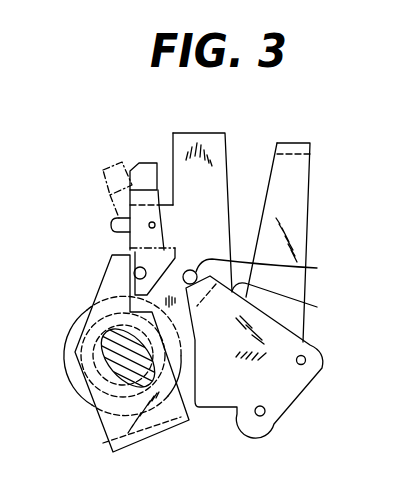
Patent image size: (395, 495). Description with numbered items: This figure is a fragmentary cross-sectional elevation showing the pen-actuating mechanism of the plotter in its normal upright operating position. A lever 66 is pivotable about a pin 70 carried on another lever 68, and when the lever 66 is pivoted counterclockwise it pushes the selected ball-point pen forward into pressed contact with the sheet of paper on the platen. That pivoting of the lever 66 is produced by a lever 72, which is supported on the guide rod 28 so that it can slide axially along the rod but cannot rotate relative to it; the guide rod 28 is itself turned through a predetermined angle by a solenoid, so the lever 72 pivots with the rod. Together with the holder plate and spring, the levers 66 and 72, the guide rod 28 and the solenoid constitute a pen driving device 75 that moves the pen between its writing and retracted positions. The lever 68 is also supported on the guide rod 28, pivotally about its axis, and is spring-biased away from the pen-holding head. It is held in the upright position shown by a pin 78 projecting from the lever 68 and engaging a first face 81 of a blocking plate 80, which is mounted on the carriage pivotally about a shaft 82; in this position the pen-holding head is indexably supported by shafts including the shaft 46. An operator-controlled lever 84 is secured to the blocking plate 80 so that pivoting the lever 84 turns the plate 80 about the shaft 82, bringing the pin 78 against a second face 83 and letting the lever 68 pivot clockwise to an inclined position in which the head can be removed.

The guide rod 28 is at (118, 371).
The shaft 46 is at (112, 226).
The lever 66 is at (148, 168).
The lever 68 is at (226, 163).
The pin 70 is at (156, 226).
The lever 72 is at (112, 279).
The pen driving device 75 is at (82, 161).
The pin 78 is at (194, 270).
The blocking plate 80 is at (217, 396).
The first face 81 is at (269, 271).
The shaft 82 is at (305, 357).
The second face 83 is at (287, 303).
The operator-controlled lever 84 is at (305, 187).